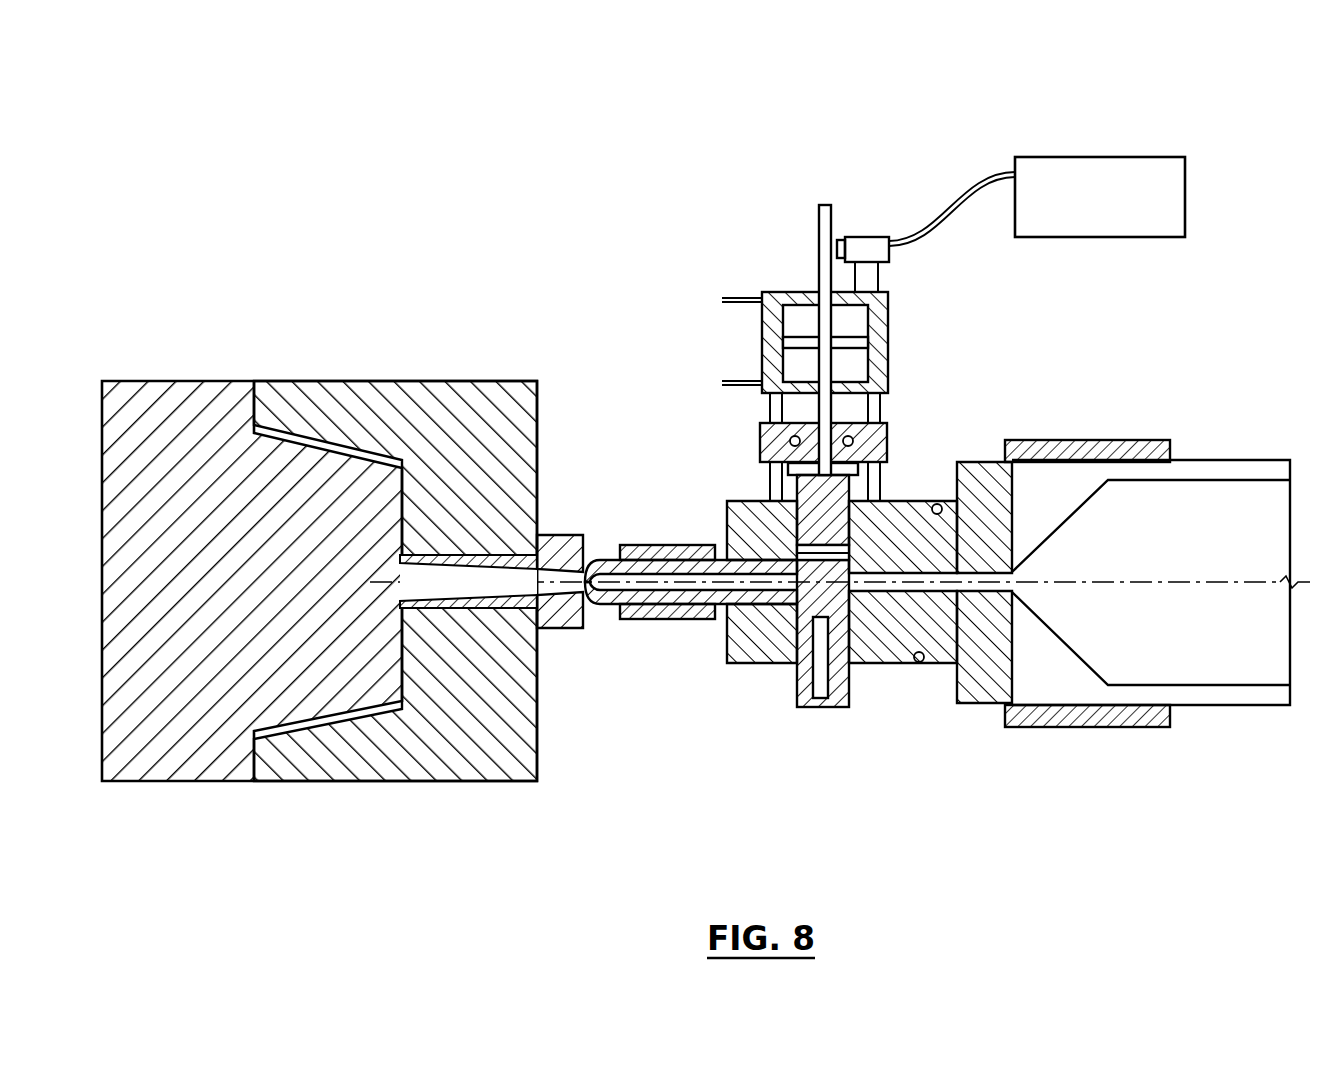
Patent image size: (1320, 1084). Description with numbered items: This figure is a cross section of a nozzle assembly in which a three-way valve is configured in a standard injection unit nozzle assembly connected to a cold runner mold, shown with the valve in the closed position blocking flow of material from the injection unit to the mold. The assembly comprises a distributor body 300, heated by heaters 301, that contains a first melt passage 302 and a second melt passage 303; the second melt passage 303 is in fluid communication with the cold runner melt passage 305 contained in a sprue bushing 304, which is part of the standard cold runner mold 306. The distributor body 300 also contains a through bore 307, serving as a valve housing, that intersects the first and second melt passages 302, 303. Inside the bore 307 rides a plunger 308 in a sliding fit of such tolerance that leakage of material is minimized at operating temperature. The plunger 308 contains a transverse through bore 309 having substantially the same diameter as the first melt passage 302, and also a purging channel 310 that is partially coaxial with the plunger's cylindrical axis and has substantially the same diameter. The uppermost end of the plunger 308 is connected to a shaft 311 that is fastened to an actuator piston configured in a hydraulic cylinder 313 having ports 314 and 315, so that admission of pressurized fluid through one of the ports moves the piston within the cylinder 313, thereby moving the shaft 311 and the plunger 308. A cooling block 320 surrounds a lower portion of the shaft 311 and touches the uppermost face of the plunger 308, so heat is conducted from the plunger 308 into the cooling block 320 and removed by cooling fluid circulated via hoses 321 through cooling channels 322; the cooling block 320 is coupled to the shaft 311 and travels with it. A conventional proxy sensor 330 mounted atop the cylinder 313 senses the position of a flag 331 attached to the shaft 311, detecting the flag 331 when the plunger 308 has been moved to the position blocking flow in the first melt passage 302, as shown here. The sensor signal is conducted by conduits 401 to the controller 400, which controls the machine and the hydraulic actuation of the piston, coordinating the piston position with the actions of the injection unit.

The distributor body 300 is at (728, 652).
The heaters 301 is at (637, 620).
The first melt passage 302 is at (977, 592).
The second melt passage 303 is at (633, 583).
The sprue bushing 304 is at (572, 544).
The cold runner melt passage 305 is at (427, 572).
The cold runner mold 306 is at (320, 347).
The through bore 307 is at (852, 523).
The plunger 308 is at (796, 628).
The transverse through bore 309 is at (832, 556).
The purging channel 310 is at (804, 644).
The shaft 311 is at (819, 222).
The hydraulic cylinder 313 is at (877, 315).
The port 314 is at (745, 298).
The port 315 is at (745, 381).
The cooling block 320 is at (877, 425).
The hoses 321 is at (888, 437).
The cooling channels 322 is at (792, 440).
The proxy sensor 330 is at (877, 237).
The flag 331 is at (838, 238).
The controller 400 is at (1125, 178).
The conduits 401 is at (965, 195).